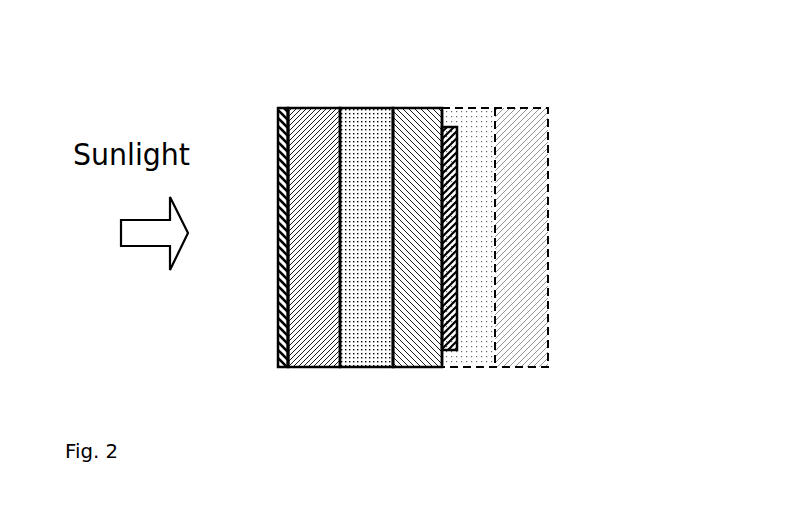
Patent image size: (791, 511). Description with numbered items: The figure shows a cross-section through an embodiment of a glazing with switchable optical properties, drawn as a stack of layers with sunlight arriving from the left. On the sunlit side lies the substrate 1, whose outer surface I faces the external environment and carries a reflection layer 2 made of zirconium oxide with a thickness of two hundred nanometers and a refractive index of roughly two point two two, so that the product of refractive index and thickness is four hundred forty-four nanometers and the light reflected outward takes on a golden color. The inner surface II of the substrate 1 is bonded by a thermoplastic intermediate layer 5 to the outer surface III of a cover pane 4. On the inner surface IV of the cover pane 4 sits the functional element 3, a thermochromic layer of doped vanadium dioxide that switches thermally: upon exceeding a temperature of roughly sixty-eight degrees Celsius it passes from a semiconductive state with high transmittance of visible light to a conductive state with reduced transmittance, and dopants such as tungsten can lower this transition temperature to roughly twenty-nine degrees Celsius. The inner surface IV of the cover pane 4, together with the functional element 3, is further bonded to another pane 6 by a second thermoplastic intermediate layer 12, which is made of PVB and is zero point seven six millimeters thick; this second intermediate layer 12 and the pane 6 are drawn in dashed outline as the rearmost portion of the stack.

The substrate 1 is at (314, 340).
The reflection layer 2 is at (283, 108).
The functional element 3 is at (447, 350).
The cover pane 4 is at (413, 340).
The thermoplastic intermediate layer 5 is at (365, 340).
The pane 6 is at (520, 342).
The second thermoplastic intermediate layer 12 is at (480, 122).
The outer surface of the substrate I is at (283, 317).
The inner surface of the substrate II is at (333, 274).
The outer surface of the cover pane III is at (388, 116).
The inner surface of the cover pane IV is at (438, 122).